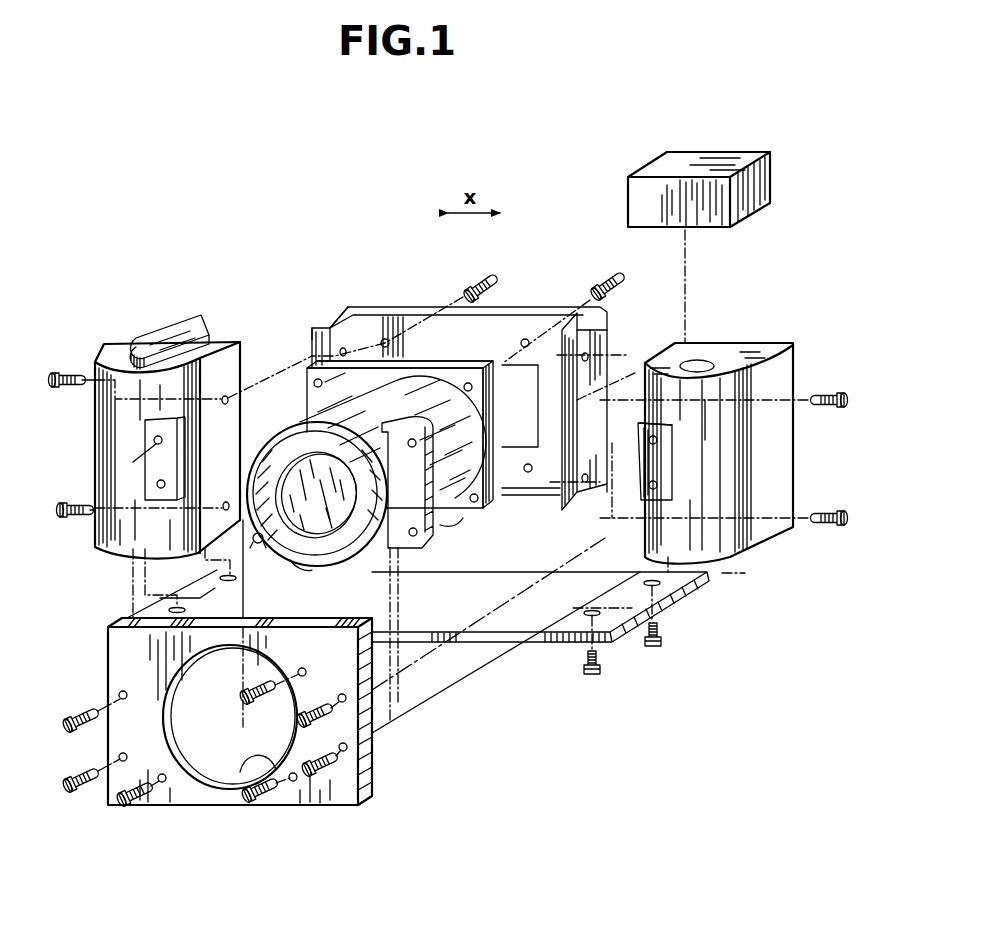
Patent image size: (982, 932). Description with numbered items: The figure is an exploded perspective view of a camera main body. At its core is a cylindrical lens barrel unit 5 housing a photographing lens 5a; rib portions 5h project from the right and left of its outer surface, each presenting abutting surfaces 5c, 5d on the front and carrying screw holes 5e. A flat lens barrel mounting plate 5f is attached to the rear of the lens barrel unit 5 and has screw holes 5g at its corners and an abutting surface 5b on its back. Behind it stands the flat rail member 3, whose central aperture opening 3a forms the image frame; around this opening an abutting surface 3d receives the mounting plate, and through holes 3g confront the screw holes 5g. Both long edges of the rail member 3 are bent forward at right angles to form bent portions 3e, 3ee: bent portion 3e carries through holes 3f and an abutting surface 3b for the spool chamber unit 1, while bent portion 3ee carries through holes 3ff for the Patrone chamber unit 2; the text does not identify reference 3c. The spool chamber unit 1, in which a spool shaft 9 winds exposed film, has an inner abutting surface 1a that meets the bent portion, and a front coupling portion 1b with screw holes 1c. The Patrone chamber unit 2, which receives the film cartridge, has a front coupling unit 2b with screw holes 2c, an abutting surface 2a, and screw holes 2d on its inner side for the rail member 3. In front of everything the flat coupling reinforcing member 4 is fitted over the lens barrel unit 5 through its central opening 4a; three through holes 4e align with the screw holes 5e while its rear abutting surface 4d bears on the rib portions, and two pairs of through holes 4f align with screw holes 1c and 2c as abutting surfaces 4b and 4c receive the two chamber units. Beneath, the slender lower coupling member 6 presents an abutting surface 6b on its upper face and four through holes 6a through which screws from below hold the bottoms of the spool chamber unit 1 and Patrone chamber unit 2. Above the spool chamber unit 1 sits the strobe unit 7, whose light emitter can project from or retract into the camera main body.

The spool chamber unit 1 is at (750, 362).
The abutting surface of the spool chamber unit 1a is at (657, 352).
The coupling portion 1b is at (664, 470).
The screw holes 1c is at (657, 485).
The Patrone chamber unit 2 is at (175, 322).
The abutting surface of the coupling portion of the Patrone chamber unit 2a is at (228, 376).
The coupling unit 2b is at (172, 466).
The screw holes 2c is at (155, 443).
The screw holes 2d is at (227, 502).
The rail member 3 is at (533, 305).
The aperture opening 3a is at (522, 446).
The abutting surface of the bent portion 3b is at (603, 320).
The left post of frame 3c is at (308, 316).
The abutting surface of the rail member 3d is at (520, 328).
The bent portion 3e is at (592, 446).
The through holes 3f is at (589, 356).
The through holes 3ff is at (306, 312).
The bent portion 3ee is at (342, 348).
The through holes 3g is at (386, 339).
The coupling reinforcing member 4 is at (343, 792).
The opening 4a is at (219, 764).
The abutting surface of the coupling reinforcing member 4b is at (380, 742).
The abutting surface of the coupling reinforcing member 4c is at (127, 616).
The abutting surface of the coupling reinforcing member 4d is at (252, 774).
The through holes 4e is at (162, 783).
The through holes 4f is at (119, 757).
The lens barrel unit 5 is at (458, 504).
The photographing lens 5a is at (282, 486).
The abutting surface of the lens barrel mounting plate 5b is at (434, 352).
The abutting surface of the rib portion 5c is at (420, 516).
The abutting surface of the rib portion 5d is at (267, 550).
The screw holes 5e is at (412, 438).
The lens barrel mounting plate 5f is at (366, 366).
The screw holes 5g is at (313, 384).
The rib portions 5h is at (292, 563).
The lower coupling member 6 is at (685, 584).
The through holes 6a is at (658, 586).
The abutting surface of the lower coupling member 6b is at (202, 596).
The strobe unit 7 is at (663, 165).
The spool shaft 9 is at (699, 362).